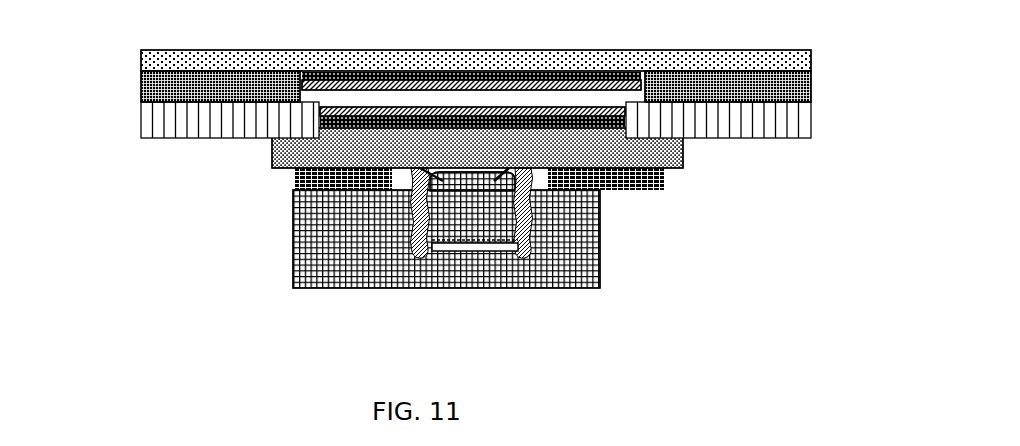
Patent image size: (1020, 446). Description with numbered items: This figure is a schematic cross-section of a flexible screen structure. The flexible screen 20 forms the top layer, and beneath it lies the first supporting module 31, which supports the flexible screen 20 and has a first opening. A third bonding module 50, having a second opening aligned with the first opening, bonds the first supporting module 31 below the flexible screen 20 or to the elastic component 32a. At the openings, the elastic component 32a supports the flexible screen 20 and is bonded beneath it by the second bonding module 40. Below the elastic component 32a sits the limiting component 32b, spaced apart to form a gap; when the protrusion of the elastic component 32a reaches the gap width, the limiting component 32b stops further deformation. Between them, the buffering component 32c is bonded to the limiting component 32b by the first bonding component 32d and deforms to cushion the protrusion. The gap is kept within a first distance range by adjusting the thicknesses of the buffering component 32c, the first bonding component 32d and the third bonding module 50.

The flexible screen 20 is at (811, 61).
The second bonding module 40 is at (141, 76).
The third bonding module 50 is at (811, 91).
The first supporting module 31 is at (811, 115).
The elastic component 32a is at (302, 79).
The limiting component 32b is at (270, 158).
The buffering component 32c is at (322, 110).
The first bonding component 32d is at (324, 125).